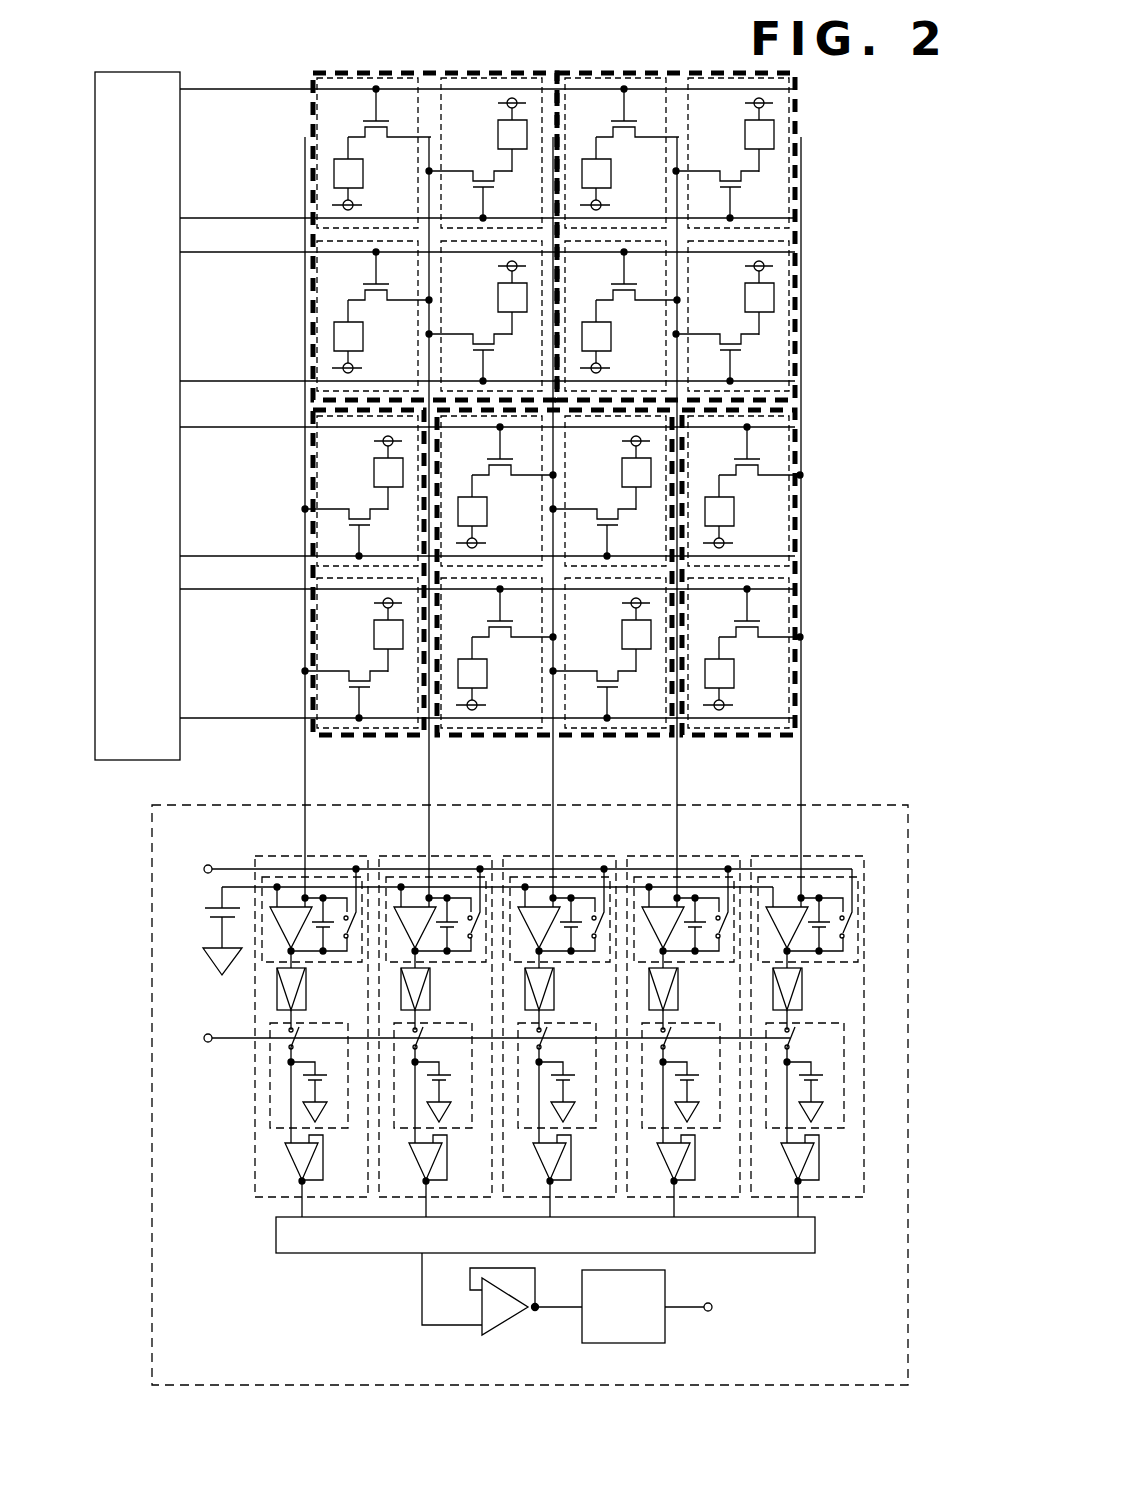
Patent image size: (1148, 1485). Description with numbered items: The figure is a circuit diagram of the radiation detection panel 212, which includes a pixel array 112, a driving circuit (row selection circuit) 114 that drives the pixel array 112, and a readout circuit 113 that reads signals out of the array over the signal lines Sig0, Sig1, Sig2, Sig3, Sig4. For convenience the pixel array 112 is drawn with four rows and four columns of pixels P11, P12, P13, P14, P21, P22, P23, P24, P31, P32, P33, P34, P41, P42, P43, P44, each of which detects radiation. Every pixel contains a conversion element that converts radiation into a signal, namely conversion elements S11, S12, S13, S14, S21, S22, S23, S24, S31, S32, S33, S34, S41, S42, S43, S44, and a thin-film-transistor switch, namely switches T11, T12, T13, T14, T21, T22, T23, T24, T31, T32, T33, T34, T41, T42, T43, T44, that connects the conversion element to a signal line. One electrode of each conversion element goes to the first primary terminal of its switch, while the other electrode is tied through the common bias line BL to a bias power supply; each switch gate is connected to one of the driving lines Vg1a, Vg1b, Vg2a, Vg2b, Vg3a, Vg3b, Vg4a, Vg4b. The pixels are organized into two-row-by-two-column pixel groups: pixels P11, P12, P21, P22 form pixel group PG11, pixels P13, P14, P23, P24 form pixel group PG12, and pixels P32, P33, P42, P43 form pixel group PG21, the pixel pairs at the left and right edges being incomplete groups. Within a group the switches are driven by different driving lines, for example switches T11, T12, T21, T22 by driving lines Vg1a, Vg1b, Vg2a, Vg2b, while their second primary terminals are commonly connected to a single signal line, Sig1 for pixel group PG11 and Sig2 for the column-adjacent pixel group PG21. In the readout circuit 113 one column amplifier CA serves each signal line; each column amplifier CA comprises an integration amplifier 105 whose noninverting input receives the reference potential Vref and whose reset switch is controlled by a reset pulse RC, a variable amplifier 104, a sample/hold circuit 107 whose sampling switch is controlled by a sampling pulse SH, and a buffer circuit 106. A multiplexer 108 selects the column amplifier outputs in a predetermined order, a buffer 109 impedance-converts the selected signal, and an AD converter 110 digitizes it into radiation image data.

The driving circuit 114 is at (147, 72).
The pixel array 112 is at (845, 360).
The readout circuit 113 is at (225, 805).
The radiation detection panel 212 is at (124, 1249).
The multiplexer 108 is at (815, 1235).
The buffer 109 is at (512, 1318).
The AD converter 110 is at (665, 1315).
The variable amplifier 104 is at (324, 990).
The integration amplifier 105 is at (317, 928).
The buffer circuit 106 is at (321, 1096).
The sample/hold circuit 107 is at (292, 1161).
The column amplifier CA is at (311, 1011).
The reset pulse RC is at (508, 870).
The sample-hold control signal SH is at (477, 1038).
The reference potential Vref is at (468, 931).
The common bias line BL is at (766, 106).
The pixel group PG11 is at (521, 73).
The pixel group PG12 is at (683, 73).
The pixel group PG21 is at (505, 738).
The signal line Sig0 is at (307, 778).
The first signal line Sig1 is at (431, 780).
The second signal line Sig2 is at (555, 778).
The signal line Sig3 is at (679, 778).
The signal line Sig4 is at (803, 778).
The driving line Vg1a is at (487, 76).
The driving line Vg1b is at (487, 205).
The driving line Vg2a is at (487, 239).
The driving line Vg2b is at (487, 368).
The driving line Vg3a is at (487, 414).
The driving line Vg3b is at (487, 543).
The driving line Vg4a is at (487, 576).
The driving line Vg4b is at (487, 705).
The pixel P11 is at (361, 103).
The pixel P12 is at (508, 204).
The pixel P13 is at (609, 103).
The pixel P14 is at (755, 204).
The pixel P21 is at (361, 266).
The pixel P22 is at (508, 367).
The pixel P23 is at (609, 266).
The pixel P24 is at (755, 367).
The pixel P31 is at (384, 542).
The pixel P32 is at (485, 441).
The pixel P33 is at (632, 542).
The pixel P34 is at (732, 441).
The pixel P41 is at (384, 704).
The pixel P42 is at (485, 603).
The pixel P43 is at (632, 704).
The pixel P44 is at (732, 603).
The conversion element S11 is at (375, 178).
The conversion element S12 is at (488, 133).
The conversion element S13 is at (623, 178).
The conversion element S14 is at (735, 133).
The conversion element S21 is at (375, 341).
The conversion element S22 is at (488, 296).
The conversion element S23 is at (623, 341).
The conversion element S24 is at (735, 296).
The conversion element S31 is at (364, 471).
The conversion element S32 is at (499, 516).
The conversion element S33 is at (612, 471).
The conversion element S34 is at (746, 516).
The conversion element S41 is at (364, 633).
The conversion element S42 is at (499, 678).
The conversion element S43 is at (612, 633).
The conversion element S44 is at (746, 678).
The switch T11 is at (389, 154).
The switch T12 is at (469, 154).
The switch T13 is at (637, 154).
The switch T14 is at (716, 154).
The switch T21 is at (390, 317).
The switch T22 is at (469, 317).
The switch T23 is at (638, 317).
The switch T24 is at (716, 317).
The switch T31 is at (345, 492).
The switch T32 is at (514, 492).
The switch T33 is at (593, 492).
The switch T34 is at (761, 492).
The switch T41 is at (345, 654).
The switch T42 is at (514, 654).
The switch T43 is at (593, 654).
The switch T44 is at (761, 654).